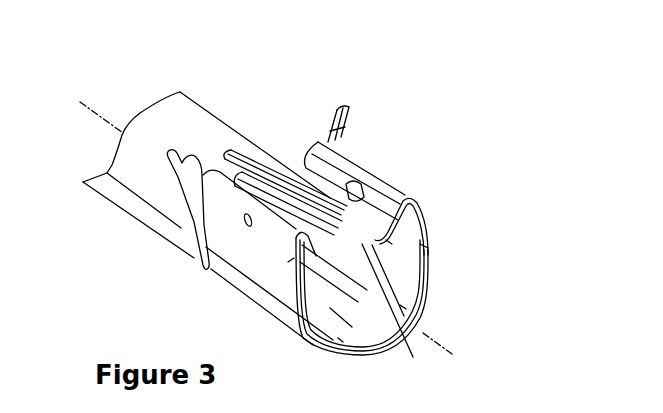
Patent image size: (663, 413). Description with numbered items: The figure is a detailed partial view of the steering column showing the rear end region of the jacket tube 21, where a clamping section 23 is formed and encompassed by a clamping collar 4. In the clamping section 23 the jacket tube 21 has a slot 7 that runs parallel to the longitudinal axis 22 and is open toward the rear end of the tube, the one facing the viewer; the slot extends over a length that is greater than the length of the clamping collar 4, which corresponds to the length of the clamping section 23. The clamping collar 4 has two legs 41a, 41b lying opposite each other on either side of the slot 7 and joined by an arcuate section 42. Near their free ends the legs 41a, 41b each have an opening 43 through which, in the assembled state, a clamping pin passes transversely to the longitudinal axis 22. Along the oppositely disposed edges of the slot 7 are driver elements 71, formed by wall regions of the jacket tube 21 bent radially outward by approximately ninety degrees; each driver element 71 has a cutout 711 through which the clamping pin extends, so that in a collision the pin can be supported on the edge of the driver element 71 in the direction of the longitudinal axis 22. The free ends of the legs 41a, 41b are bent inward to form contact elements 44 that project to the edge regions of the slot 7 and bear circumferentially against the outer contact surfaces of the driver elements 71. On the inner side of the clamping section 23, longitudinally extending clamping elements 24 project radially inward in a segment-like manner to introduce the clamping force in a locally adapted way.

The jacket tube 21 is at (197, 122).
The longitudinal axis 22 is at (452, 354).
The clamping section 23 is at (424, 247).
The clamping elements 24 is at (403, 307).
The clamping collar 4 is at (406, 181).
The leg 41a is at (425, 214).
The leg 41b is at (287, 258).
The arcuate section 42 is at (377, 357).
The opening 43 is at (245, 226).
The contact elements 44 is at (390, 240).
The slot 7 is at (250, 170).
The driver elements 71 is at (410, 352).
The cutout 711 is at (338, 192).